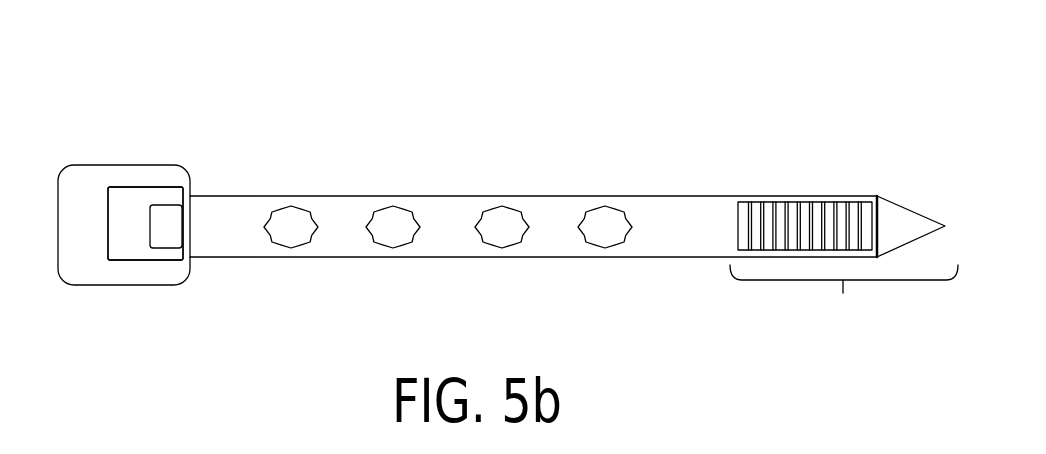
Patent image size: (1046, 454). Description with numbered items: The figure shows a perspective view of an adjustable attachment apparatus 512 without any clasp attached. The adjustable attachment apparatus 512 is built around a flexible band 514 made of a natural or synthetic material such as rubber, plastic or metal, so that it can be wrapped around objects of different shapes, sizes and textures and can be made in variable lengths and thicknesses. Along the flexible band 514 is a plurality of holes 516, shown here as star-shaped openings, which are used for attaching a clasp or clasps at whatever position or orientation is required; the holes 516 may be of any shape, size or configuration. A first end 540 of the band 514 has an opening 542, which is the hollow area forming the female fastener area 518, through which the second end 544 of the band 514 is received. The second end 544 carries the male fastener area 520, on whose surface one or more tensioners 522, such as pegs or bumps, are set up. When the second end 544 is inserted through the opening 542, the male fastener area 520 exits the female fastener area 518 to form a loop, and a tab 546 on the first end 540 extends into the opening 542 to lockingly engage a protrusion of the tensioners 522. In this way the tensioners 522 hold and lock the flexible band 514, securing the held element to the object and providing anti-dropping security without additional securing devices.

The adjustable attachment apparatus 512 is at (166, 64).
The first end 540 is at (77, 194).
The opening 542 is at (128, 194).
The tab 546 is at (168, 238).
The female fastener area 518 is at (135, 225).
The flexible band 514 is at (690, 228).
The holes 516 is at (300, 230).
The tensioners 522 is at (828, 213).
The male fastener area 520 is at (844, 311).
The second end 544 is at (893, 215).